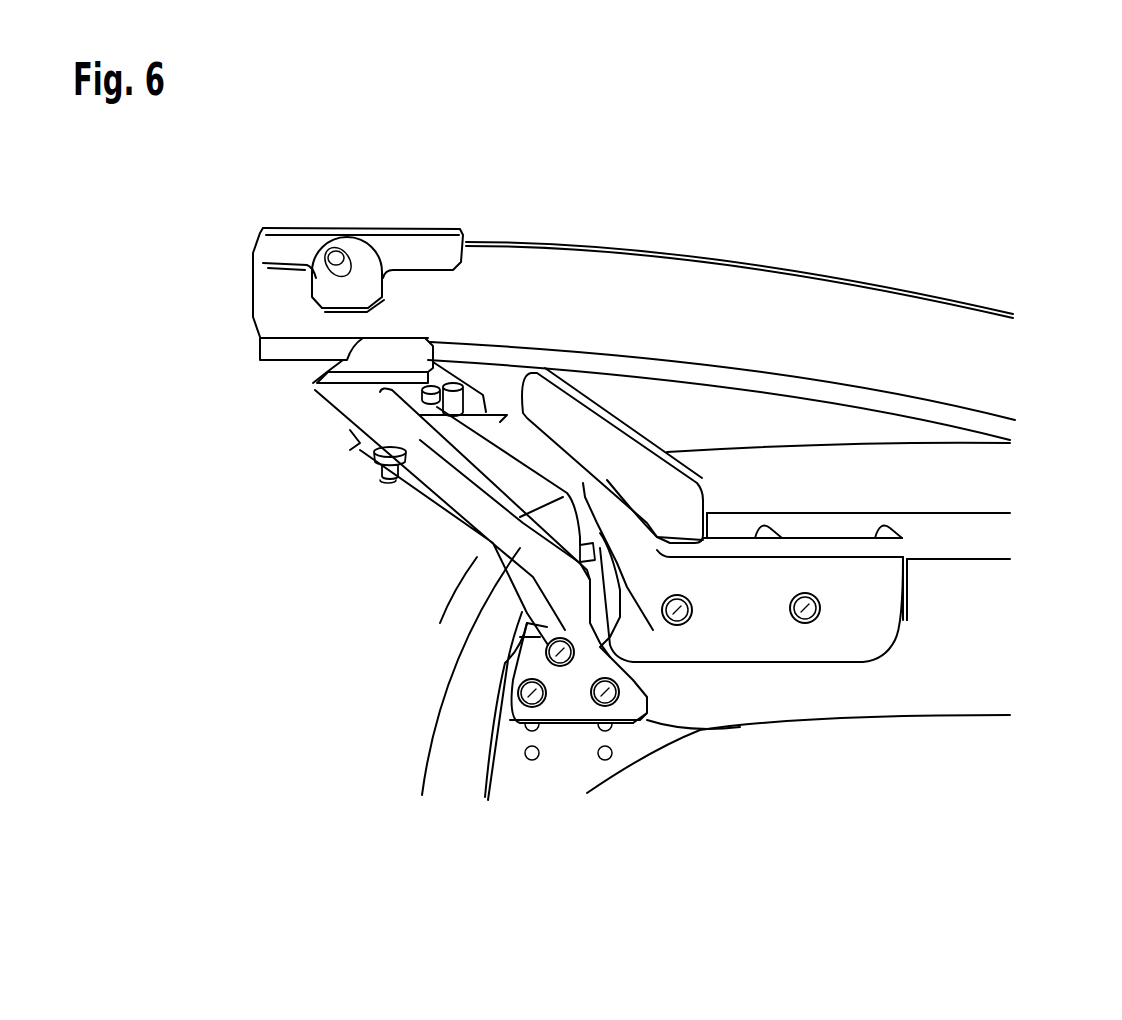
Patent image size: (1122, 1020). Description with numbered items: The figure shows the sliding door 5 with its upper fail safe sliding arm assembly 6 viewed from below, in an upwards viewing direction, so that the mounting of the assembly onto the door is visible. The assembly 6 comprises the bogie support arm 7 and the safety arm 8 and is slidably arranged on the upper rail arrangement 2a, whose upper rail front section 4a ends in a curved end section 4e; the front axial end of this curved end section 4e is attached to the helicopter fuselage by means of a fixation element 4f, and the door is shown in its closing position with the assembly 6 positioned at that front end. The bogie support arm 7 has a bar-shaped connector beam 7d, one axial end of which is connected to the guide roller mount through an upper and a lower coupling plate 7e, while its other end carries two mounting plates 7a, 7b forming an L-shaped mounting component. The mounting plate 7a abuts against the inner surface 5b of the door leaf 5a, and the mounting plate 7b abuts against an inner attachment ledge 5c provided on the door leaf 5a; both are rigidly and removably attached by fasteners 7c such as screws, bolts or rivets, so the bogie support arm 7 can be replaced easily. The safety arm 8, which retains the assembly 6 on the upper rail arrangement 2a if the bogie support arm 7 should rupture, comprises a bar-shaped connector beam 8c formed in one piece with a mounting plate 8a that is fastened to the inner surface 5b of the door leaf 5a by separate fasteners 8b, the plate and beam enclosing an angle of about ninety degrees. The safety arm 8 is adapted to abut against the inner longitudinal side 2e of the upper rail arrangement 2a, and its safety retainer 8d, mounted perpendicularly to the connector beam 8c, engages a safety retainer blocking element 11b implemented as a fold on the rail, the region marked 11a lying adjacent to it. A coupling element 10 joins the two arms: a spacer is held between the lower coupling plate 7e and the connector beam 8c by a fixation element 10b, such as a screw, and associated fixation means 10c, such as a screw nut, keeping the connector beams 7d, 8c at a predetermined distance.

The upper rail arrangement 2a is at (953, 287).
The inner longitudinal side 2e is at (843, 392).
The upper rail front section 4a is at (650, 290).
The curved end section 4e is at (800, 323).
The fixation element 4f is at (295, 247).
The sliding door 5 is at (440, 737).
The door leaf 5a is at (970, 683).
The inner surface 5b is at (683, 700).
The inner attachment ledge 5c is at (997, 540).
The upper fail safe sliding arm assembly 6 is at (373, 533).
The bogie support arm 7 is at (667, 407).
The mounting plate 7a is at (882, 622).
The mounting plate 7b is at (917, 553).
The fasteners 7c is at (690, 620).
The connector beam 7d is at (565, 423).
The coupling plate 7e is at (478, 405).
The safety arm 8 is at (441, 546).
The mounting plate 8a is at (630, 706).
The fasteners 8b is at (543, 707).
The connector beam 8c is at (437, 520).
The safety retainer 8d is at (393, 360).
The coupling element 10 is at (333, 440).
The fixation element 10b is at (390, 480).
The fixation means 10c is at (377, 463).
The holder upper part 11a is at (240, 240).
The safety retainer blocking element 11b is at (272, 352).